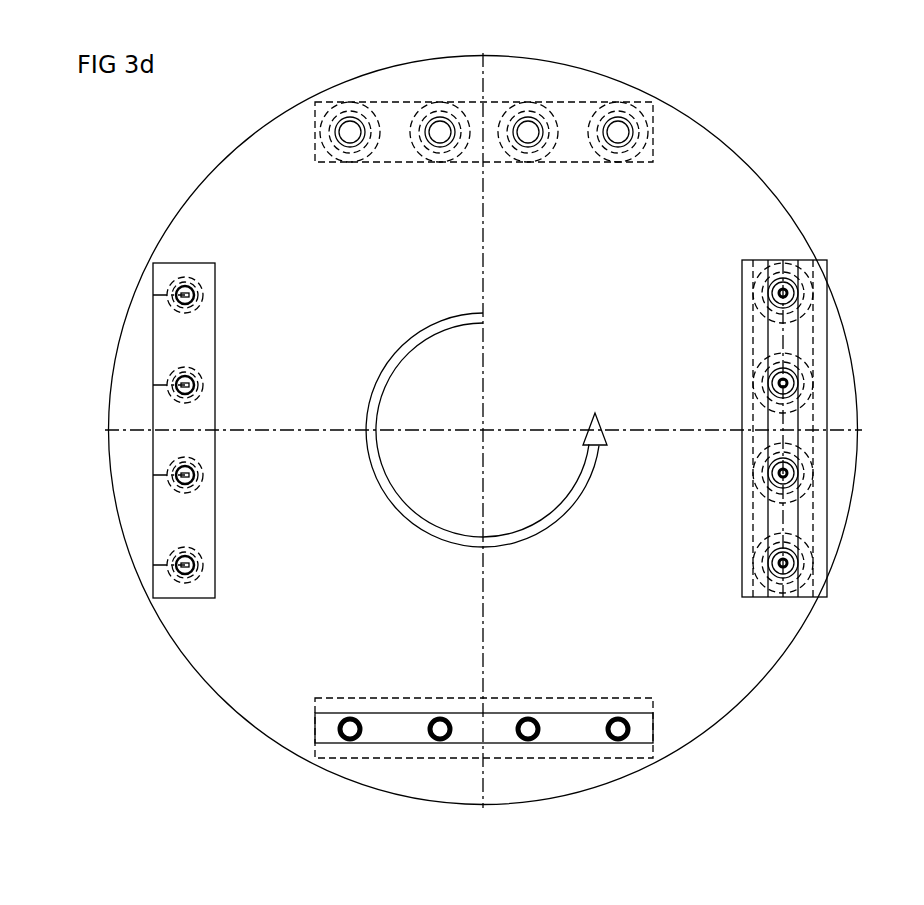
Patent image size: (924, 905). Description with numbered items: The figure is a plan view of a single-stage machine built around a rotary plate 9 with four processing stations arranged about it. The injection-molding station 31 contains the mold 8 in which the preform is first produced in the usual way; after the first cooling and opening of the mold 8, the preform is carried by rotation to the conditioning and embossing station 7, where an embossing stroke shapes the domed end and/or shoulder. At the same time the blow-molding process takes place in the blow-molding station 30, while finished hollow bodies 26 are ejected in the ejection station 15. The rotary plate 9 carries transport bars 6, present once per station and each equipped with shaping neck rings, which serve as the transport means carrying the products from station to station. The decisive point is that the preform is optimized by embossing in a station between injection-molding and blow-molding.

The transport bars 6 is at (650, 157).
The conditioning and embossing station 7 is at (329, 726).
The mold 8 is at (192, 332).
The rotary plate 9 is at (726, 212).
The ejection station 15 is at (396, 152).
The hollow bodies 26 is at (538, 107).
The blow-molding station 30 is at (810, 590).
The injection-molding station 31 is at (159, 475).